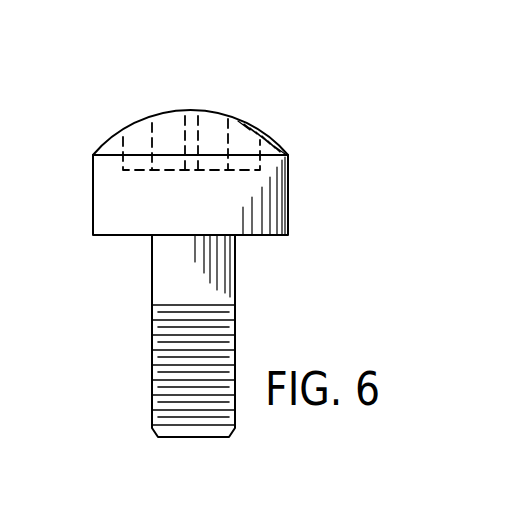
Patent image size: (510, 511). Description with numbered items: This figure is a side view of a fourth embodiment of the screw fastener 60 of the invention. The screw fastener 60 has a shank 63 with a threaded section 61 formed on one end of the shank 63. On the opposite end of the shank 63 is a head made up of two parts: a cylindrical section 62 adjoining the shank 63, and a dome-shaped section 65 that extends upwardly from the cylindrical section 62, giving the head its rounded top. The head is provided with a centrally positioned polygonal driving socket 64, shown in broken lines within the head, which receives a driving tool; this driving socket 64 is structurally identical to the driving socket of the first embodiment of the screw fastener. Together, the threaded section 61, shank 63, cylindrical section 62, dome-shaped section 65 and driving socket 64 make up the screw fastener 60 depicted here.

The screw fastener 60 is at (125, 275).
The threaded section 61 is at (152, 349).
The cylindrical section 62 is at (290, 198).
The shank 63 is at (237, 283).
The polygonal driving socket 64 is at (210, 130).
The dome-shaped section 65 is at (275, 133).